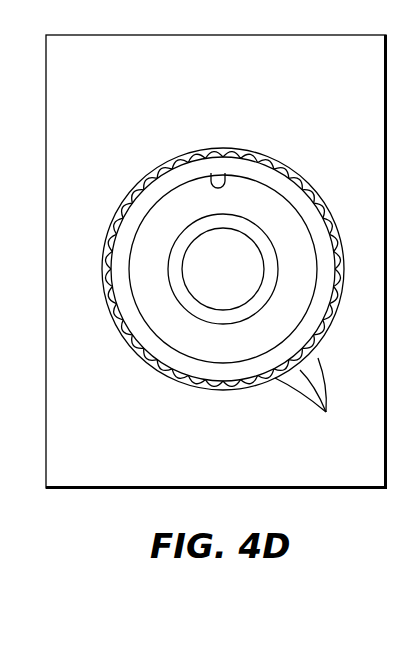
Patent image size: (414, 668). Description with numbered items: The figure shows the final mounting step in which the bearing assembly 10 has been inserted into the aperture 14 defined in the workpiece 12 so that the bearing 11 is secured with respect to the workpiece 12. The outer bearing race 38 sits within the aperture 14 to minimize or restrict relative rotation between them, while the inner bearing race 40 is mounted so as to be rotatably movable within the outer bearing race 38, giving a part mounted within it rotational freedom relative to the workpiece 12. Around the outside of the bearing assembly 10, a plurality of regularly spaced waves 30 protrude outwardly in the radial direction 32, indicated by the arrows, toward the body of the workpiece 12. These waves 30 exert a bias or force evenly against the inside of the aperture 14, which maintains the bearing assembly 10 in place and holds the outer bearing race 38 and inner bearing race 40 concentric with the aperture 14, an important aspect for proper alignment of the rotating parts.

The bearing assembly 10 is at (313, 284).
The bearing 11 is at (150, 237).
The workpiece 12 is at (156, 71).
The aperture 14 is at (165, 376).
The waves 30 is at (308, 402).
The radial direction 32 is at (76, 166).
The outer bearing race 38 is at (226, 187).
The inner bearing race 40 is at (262, 229).